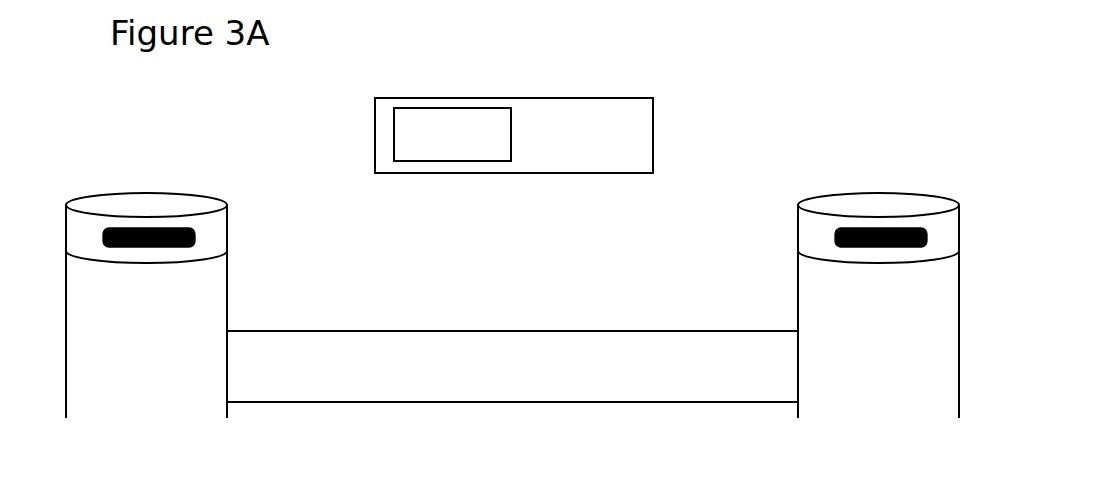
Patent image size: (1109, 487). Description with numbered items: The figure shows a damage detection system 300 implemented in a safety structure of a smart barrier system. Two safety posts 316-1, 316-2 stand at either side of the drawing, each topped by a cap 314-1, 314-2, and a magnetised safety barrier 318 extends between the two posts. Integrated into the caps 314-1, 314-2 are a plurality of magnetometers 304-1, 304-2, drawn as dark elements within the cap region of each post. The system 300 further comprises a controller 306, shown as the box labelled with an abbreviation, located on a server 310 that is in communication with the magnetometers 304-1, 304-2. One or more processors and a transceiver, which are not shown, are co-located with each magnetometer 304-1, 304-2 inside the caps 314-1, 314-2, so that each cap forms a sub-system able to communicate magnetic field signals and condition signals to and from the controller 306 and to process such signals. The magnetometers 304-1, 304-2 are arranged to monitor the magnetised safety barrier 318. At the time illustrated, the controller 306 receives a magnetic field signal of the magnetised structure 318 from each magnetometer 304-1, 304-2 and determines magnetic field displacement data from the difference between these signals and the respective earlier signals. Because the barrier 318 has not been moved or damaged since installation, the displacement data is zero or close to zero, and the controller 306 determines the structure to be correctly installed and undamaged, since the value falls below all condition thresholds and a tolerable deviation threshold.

The damage detection system 300 is at (690, 86).
The magnetometer 304-1 is at (122, 230).
The magnetometer 304-2 is at (858, 230).
The controller 306 is at (512, 135).
The server 310 is at (418, 97).
The cap 314-1 is at (227, 236).
The cap 314-2 is at (798, 231).
The safety post 316-1 is at (227, 300).
The safety post 316-2 is at (798, 287).
The magnetised safety barrier 318 is at (515, 331).